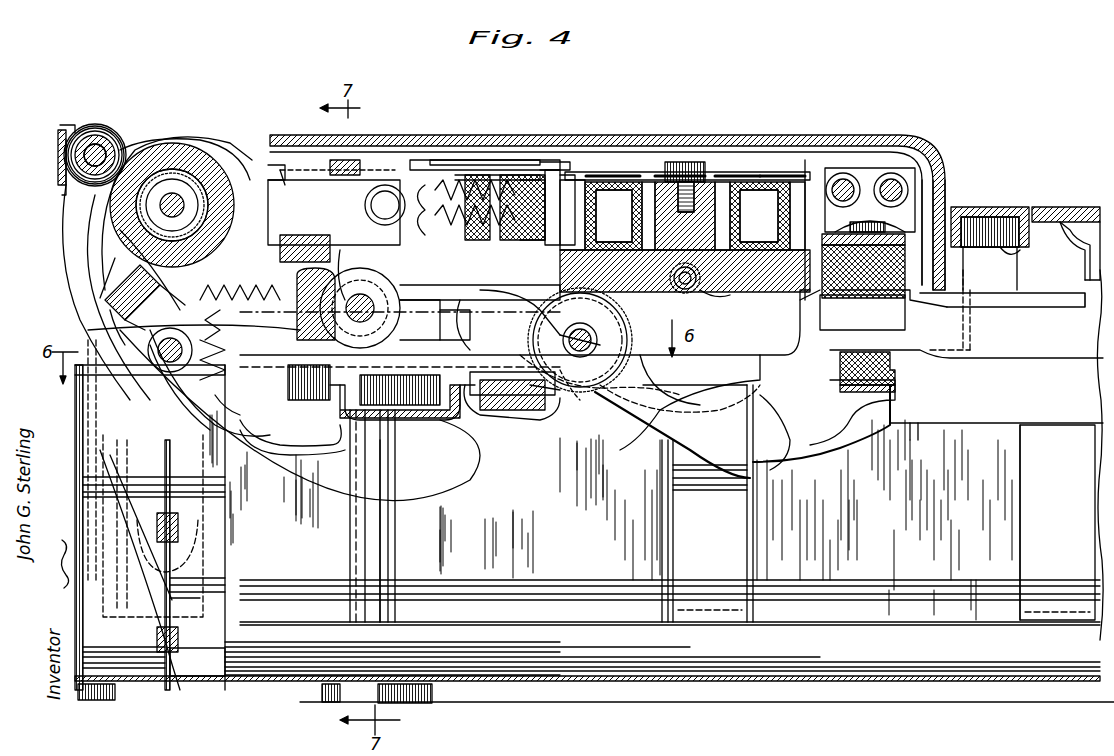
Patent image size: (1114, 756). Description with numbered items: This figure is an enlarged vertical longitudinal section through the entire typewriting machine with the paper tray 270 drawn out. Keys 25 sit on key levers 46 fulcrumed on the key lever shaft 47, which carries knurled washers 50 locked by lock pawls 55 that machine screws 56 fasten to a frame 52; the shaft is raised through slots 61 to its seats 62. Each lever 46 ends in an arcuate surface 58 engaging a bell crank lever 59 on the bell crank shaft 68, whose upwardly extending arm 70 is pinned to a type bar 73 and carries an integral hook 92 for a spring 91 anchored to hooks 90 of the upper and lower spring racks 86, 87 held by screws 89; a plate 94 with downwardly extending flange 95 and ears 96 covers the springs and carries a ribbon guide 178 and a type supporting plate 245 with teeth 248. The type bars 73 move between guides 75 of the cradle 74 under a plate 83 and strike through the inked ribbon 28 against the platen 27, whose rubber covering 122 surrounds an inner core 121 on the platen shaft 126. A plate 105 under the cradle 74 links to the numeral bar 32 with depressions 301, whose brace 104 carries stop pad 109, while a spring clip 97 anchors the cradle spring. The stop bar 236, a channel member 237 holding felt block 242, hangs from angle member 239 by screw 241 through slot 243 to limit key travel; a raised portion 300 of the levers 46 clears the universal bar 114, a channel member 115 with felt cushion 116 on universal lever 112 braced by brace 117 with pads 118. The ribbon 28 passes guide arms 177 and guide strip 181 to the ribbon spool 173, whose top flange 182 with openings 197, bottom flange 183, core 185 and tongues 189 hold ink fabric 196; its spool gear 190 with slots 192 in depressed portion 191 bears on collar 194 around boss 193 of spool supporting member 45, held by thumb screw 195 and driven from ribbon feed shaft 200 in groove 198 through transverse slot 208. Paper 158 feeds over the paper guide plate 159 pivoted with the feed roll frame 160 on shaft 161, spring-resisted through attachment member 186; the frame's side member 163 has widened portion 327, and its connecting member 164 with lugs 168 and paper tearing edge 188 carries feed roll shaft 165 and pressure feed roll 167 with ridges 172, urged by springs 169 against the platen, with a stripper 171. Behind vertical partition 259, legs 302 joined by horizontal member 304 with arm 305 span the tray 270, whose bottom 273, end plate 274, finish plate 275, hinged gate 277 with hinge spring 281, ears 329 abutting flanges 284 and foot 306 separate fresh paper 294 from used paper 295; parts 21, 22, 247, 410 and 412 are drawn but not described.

The link rod 21 is at (469, 308).
The link rod 22 is at (520, 301).
The keys 25 is at (1085, 204).
The platen 27 is at (155, 148).
The inked ribbon 28 is at (300, 140).
The numeral bar 32 is at (1010, 207).
The spool supporting member 45 is at (830, 314).
The key levers 46 is at (752, 366).
The key lever shaft 47 is at (672, 420).
The spacers or washers 50 is at (612, 395).
The frame 52 is at (525, 410).
The lock pawls 55 is at (558, 398).
The machine screws 56 is at (490, 415).
The arcuate surfaces 58 is at (455, 331).
The bell crank levers 59 is at (480, 282).
The slots 61 is at (584, 405).
The seats 62 is at (561, 308).
The bell crank shaft 68 is at (420, 326).
The upwardly extending arm 70 is at (400, 280).
The type bar 73 is at (362, 205).
The cradle 74 is at (321, 248).
The guides 75 is at (334, 205).
The plate 83 is at (340, 160).
The upper spring rack 86 is at (588, 172).
The lower spring rack 87 is at (520, 242).
The screws 89 is at (490, 240).
The hooks 90 is at (497, 164).
The springs 91 is at (568, 128).
The integral hook 92 is at (422, 185).
The plate 94 is at (565, 175).
The downwardly extending flange 95 is at (570, 215).
The ears 96 is at (530, 180).
The spring clip 97 is at (231, 408).
The numeral bar brace 104 is at (335, 418).
The plate 105 is at (372, 275).
The adjustable stop pad 109 is at (309, 381).
The universal lever 112 is at (805, 460).
The universal bar 114 is at (870, 422).
The channel member 115 is at (898, 392).
The felt cushion 116 is at (897, 376).
The universal bar brace 117 is at (415, 455).
The adjustable pads 118 is at (445, 405).
The inner core 121 is at (185, 190).
The rubber covering 122 is at (180, 145).
The platen shaft 126 is at (120, 250).
The paper 158 is at (86, 337).
The paper guide plate 159 is at (145, 297).
The paper feed roll frame 160 is at (56, 210).
The shaft 161 is at (160, 360).
The side member 163 is at (75, 225).
The connecting member 164 is at (60, 128).
The feed roll shaft 165 is at (112, 135).
The pressure feed roll 167 is at (96, 148).
The lug 168 is at (58, 152).
The springs 169 is at (200, 292).
The stripper 171 is at (100, 290).
The ridges 172 is at (75, 135).
The ribbon spool 173 is at (808, 180).
The guide arms 177 is at (285, 168).
The guide 178 is at (530, 162).
The guide strip 181 is at (275, 370).
The top flange 182 is at (790, 174).
The bottom flange 183 is at (760, 216).
The core 185 is at (785, 176).
The spring attachment member 186 is at (195, 413).
The paper tearing edge 188 is at (60, 180).
The tongues 189 is at (705, 120).
The ribbon spool gear 190 is at (744, 216).
The depressed portion 191 is at (863, 271).
The slots 192 is at (863, 259).
The boss 193 is at (735, 176).
The collar 194 is at (613, 216).
The thumb screw 195 is at (700, 200).
The fabric 196 is at (660, 174).
The openings 197 is at (605, 174).
The groove 198 is at (708, 298).
The ribbon feed shaft 200 is at (672, 293).
The transverse slot 208 is at (776, 390).
The stop bar 236 is at (945, 215).
The channel member 237 is at (935, 310).
The angle member 239 is at (940, 180).
The screw 241 is at (935, 190).
The felt block 242 is at (862, 312).
The slot 243 is at (862, 175).
The type supporting plate 245 is at (476, 172).
The block 247 is at (198, 560).
The teeth 248 is at (436, 160).
The vertical partition 259 is at (960, 268).
The paper tray 270 is at (240, 676).
The bottom 273 is at (200, 680).
The stationary end plate 274 is at (80, 484).
The enlarged finish plate 275 is at (76, 410).
The hinged gate 277 is at (178, 640).
The gate hinge spring 281 is at (165, 592).
The flanges 284 is at (292, 441).
The fresh paper supply 294 is at (580, 580).
The used paper 295 is at (140, 678).
The raised portion 300 is at (966, 324).
The depressions 301 is at (1035, 207).
The leg 302 is at (1020, 486).
The horizontal member 304 is at (1055, 432).
The arm 305 is at (996, 425).
The foot 306 is at (98, 702).
The widened portion 327 is at (108, 316).
The ears 329 is at (280, 480).
The foot 410 is at (410, 702).
The post 412 is at (365, 532).